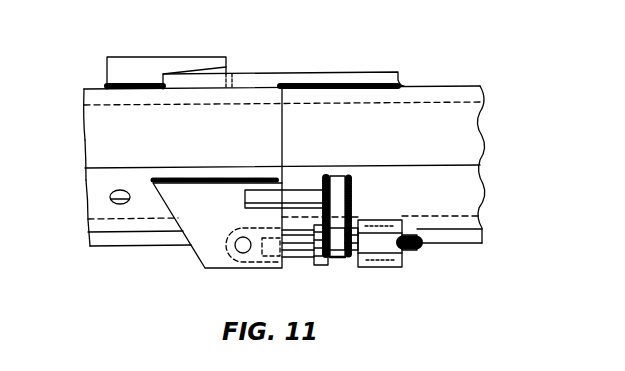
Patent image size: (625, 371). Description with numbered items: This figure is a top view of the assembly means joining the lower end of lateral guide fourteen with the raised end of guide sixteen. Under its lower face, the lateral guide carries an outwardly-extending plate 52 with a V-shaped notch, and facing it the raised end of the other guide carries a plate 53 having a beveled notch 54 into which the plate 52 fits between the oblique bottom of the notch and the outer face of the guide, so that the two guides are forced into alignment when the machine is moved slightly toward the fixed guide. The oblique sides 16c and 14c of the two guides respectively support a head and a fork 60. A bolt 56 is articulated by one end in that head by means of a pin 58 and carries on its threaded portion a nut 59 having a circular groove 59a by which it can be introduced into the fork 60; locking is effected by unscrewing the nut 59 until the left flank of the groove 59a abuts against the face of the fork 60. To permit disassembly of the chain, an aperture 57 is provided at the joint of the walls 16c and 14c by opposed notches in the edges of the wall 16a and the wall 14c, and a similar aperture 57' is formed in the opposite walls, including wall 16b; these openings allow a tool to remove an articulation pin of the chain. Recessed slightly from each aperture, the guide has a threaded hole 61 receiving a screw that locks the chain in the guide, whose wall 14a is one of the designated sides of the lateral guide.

The side of guide 14 14a is at (470, 122).
The oblique side of guide 14 14c is at (465, 191).
The wall of guide 16 16a is at (88, 141).
The wall of guide 16 16b is at (84, 96).
The oblique side of guide 16 16c is at (88, 191).
The outwardly-extending plate 52 is at (362, 76).
The plate 53 is at (138, 64).
The beveled notch 54 is at (227, 73).
The bolt 56 is at (302, 257).
The aperture 57 is at (290, 172).
The aperture 57' is at (299, 108).
The pin 58 is at (241, 250).
The nut 59 is at (387, 263).
The circular groove 59a is at (350, 232).
The fork 60 is at (343, 255).
The threaded hole 61 is at (121, 191).